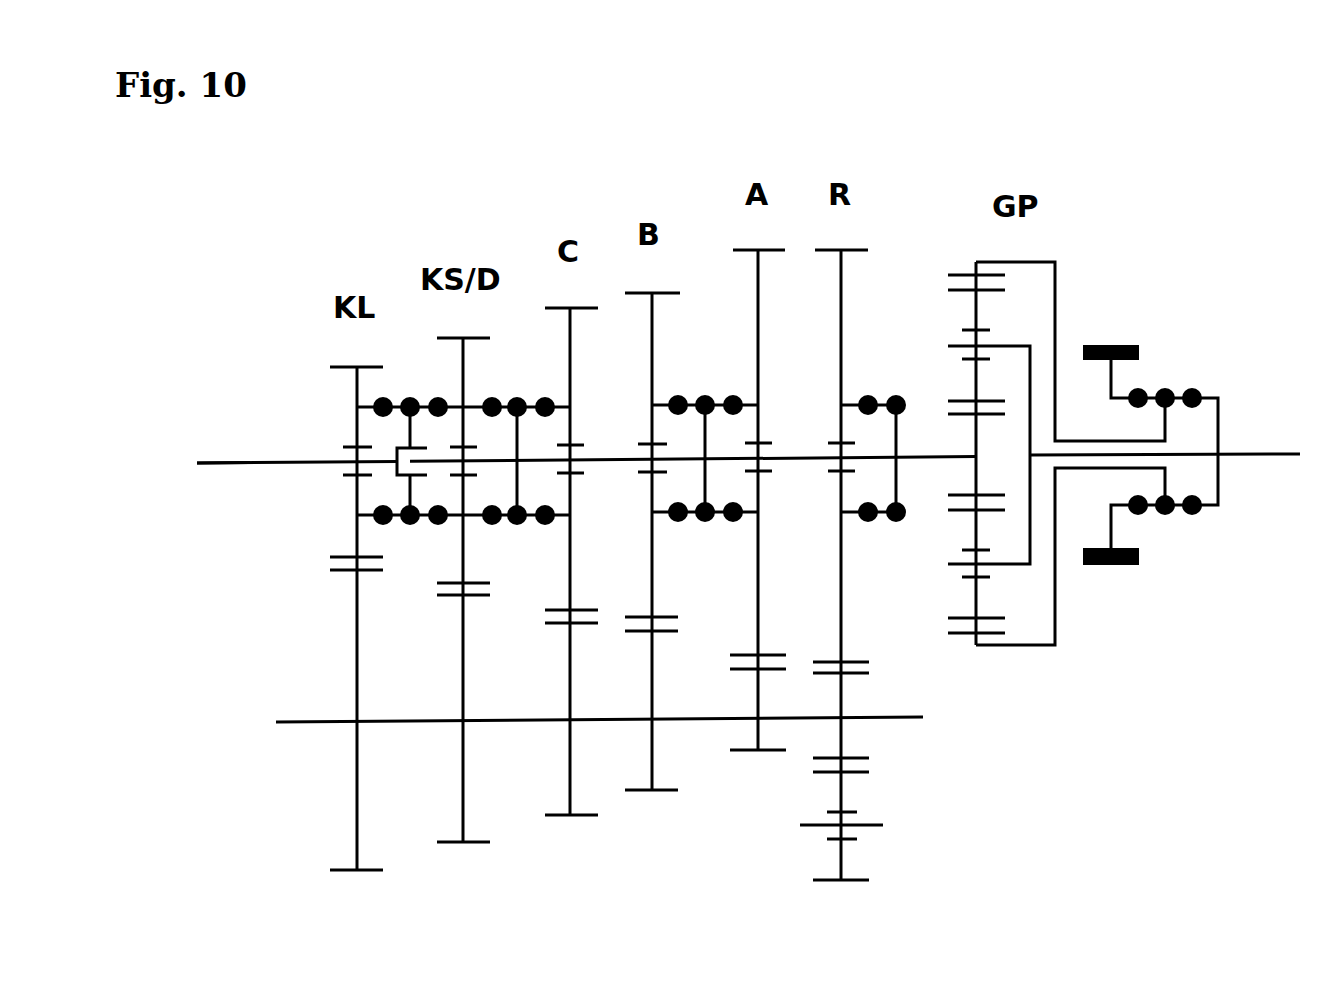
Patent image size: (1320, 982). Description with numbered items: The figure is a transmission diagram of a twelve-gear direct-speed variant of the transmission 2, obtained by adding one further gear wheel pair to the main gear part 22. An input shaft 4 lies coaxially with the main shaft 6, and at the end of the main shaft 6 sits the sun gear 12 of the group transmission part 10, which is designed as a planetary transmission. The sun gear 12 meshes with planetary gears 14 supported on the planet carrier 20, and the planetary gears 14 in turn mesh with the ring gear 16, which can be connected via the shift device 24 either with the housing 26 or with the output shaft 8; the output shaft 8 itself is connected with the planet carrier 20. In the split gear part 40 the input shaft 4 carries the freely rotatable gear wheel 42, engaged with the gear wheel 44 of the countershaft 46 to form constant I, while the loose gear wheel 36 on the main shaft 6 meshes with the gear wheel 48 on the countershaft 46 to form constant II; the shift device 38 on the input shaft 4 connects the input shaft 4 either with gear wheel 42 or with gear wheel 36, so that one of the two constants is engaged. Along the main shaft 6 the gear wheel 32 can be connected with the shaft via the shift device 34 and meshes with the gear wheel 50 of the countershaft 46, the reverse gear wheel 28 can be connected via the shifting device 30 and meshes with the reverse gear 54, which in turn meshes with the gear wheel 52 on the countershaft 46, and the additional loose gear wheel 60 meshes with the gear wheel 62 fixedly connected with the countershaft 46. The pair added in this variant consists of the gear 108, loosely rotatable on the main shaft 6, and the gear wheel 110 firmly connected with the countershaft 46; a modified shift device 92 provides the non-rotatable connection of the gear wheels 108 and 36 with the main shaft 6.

The transmission 2 is at (250, 378).
The input shaft 4 is at (250, 462).
The main shaft 6 is at (609, 458).
The output shaft 8 is at (1262, 456).
The group transmission part 10 is at (1008, 155).
The sun gear 12 is at (978, 482).
The planetary gears 14 is at (980, 318).
The ring gear 16 is at (975, 648).
The planet carrier 20 is at (1032, 370).
The main gear part 22 is at (638, 143).
The shift device 24 is at (1167, 515).
The housing 26 is at (1113, 383).
The reverse gear wheel 28 is at (842, 313).
The shifting device 30 is at (896, 522).
The gear wheel 32 is at (652, 370).
The shift device 34 is at (705, 522).
The gear wheel 36 is at (463, 365).
The shift device 38 is at (410, 525).
The split gear part 40 is at (411, 152).
The gear wheel 42 is at (357, 388).
The gear wheel 44 is at (357, 778).
The countershaft 46 is at (305, 722).
The gear wheel 48 is at (463, 788).
The gear wheel 50 is at (652, 763).
The gear wheel 52 is at (845, 703).
The reverse gear 54 is at (845, 793).
The gear wheel 60 is at (758, 313).
The gear wheel 62 is at (753, 752).
The modified shift device 92 is at (517, 525).
The gear 108 is at (568, 358).
The gear wheel 110 is at (570, 748).